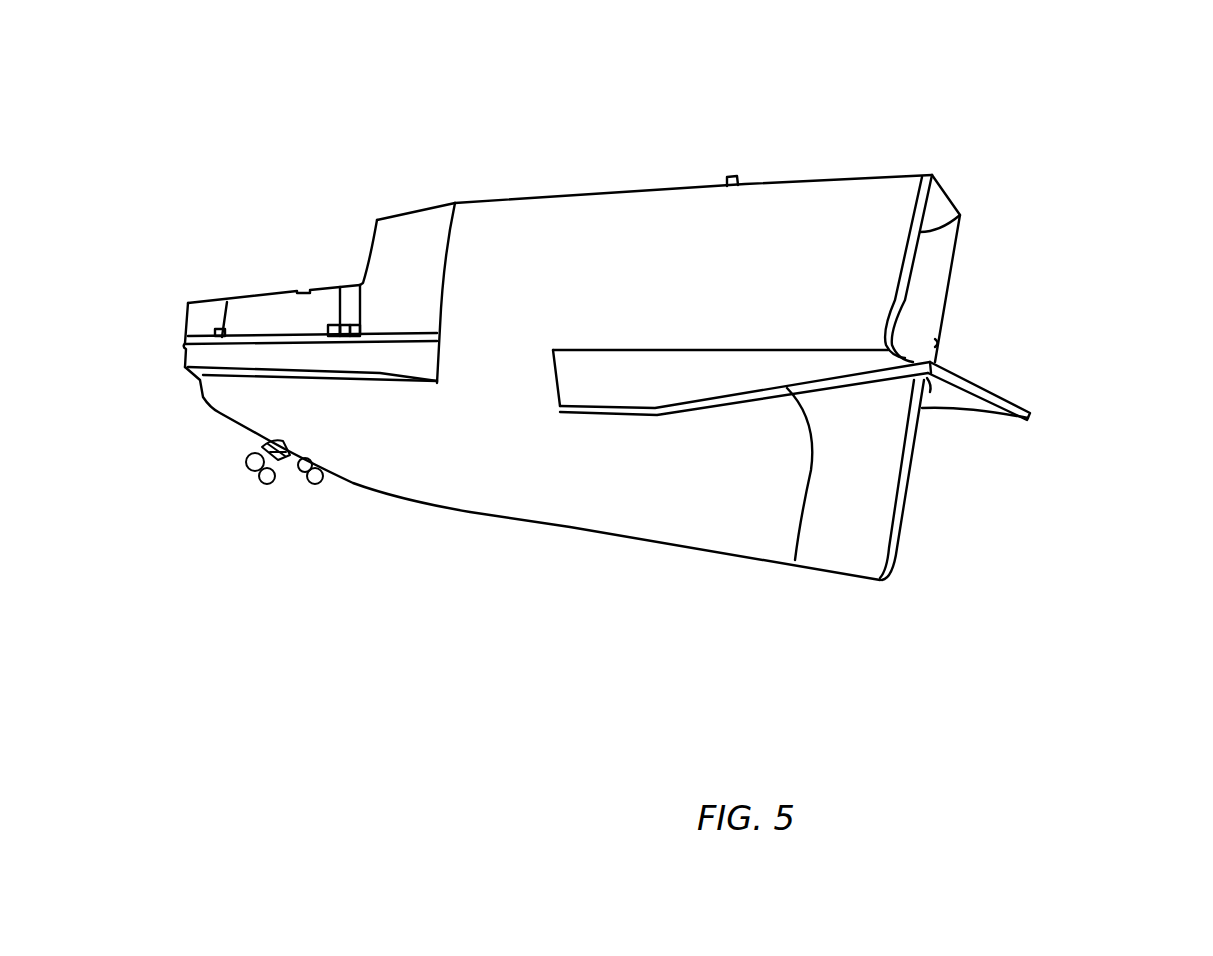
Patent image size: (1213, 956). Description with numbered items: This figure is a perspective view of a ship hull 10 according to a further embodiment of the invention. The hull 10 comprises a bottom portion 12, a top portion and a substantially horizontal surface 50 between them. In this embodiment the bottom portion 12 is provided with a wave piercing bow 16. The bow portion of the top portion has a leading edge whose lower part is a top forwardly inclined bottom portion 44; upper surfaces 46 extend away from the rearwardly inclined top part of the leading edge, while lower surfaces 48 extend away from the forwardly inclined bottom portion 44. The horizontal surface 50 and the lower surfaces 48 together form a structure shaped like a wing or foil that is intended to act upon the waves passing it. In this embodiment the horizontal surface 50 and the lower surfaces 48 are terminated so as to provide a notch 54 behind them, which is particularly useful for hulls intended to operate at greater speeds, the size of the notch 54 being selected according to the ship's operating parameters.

The ship hull 10 is at (800, 181).
The bottom portion 12 is at (447, 478).
The wave piercing bow 16 is at (908, 494).
The top forwardly inclined bottom portion 44 is at (960, 215).
The upper surfaces 46 is at (826, 226).
The lower surfaces 48 is at (795, 560).
The horizontal surface 50 is at (628, 418).
The notch 54 is at (525, 358).